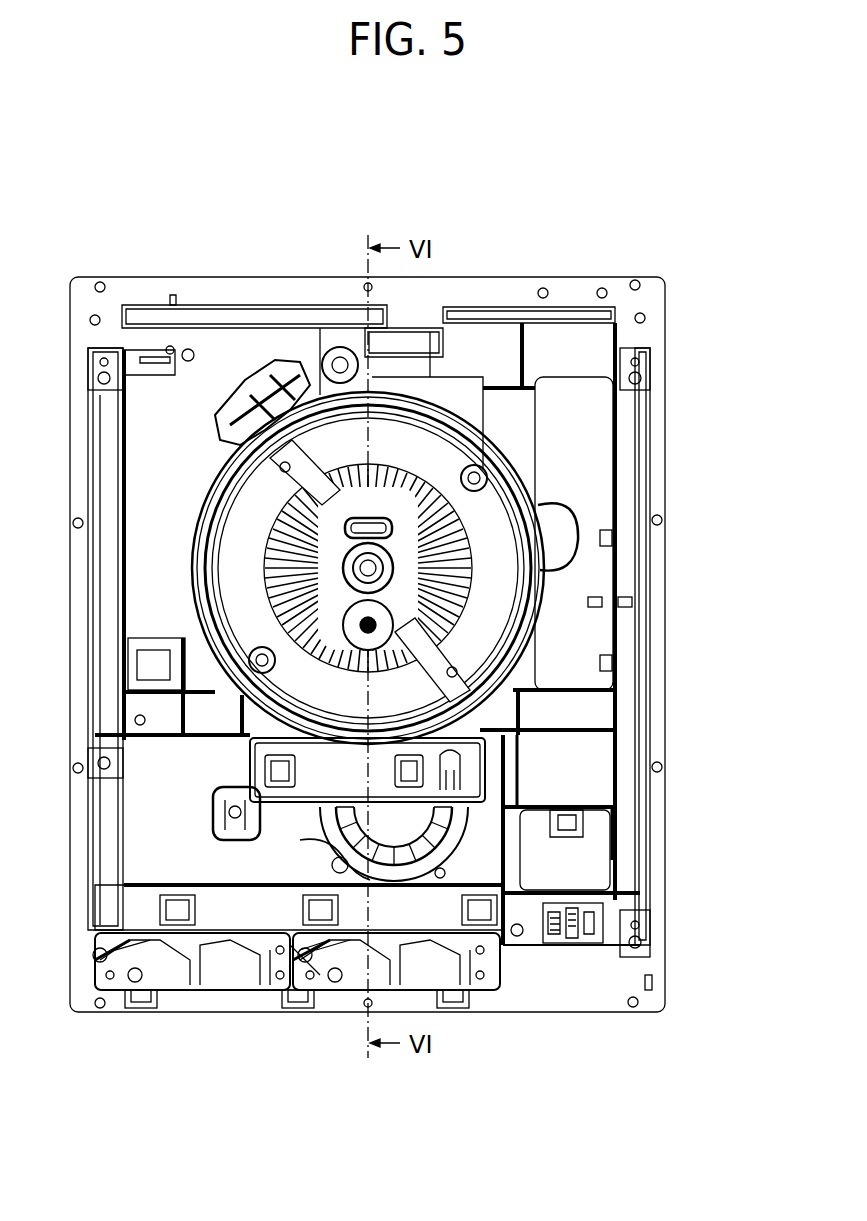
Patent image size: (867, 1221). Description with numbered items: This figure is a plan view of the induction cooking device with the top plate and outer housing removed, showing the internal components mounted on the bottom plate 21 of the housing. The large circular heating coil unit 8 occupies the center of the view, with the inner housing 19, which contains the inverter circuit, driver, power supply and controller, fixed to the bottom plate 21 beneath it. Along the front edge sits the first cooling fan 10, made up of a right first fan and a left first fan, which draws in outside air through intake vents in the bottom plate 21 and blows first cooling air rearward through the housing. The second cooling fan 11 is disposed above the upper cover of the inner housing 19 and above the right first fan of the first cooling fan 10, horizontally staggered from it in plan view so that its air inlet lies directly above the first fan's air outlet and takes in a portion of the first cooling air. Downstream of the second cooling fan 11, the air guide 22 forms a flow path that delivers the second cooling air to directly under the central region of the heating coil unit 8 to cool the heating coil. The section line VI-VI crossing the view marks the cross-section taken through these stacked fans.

The heating coil unit 8 is at (455, 488).
The first cooling fan 10 is at (195, 990).
The second cooling fan 11 is at (337, 840).
The inner housing 19 is at (585, 339).
The bottom plate 21 is at (655, 968).
The air guide 22 is at (307, 773).